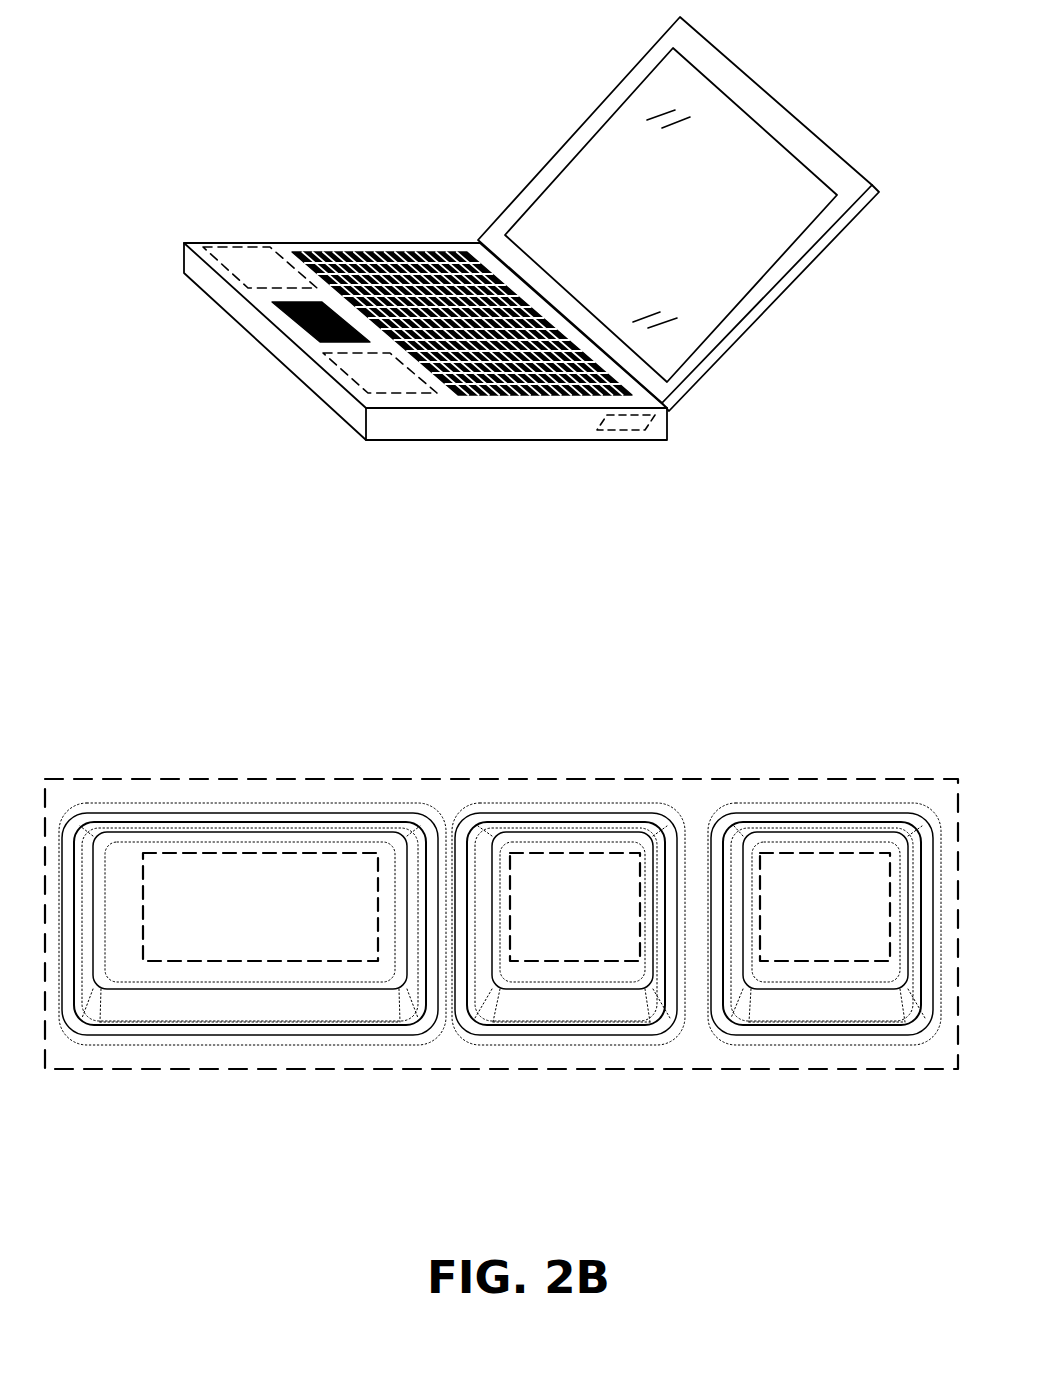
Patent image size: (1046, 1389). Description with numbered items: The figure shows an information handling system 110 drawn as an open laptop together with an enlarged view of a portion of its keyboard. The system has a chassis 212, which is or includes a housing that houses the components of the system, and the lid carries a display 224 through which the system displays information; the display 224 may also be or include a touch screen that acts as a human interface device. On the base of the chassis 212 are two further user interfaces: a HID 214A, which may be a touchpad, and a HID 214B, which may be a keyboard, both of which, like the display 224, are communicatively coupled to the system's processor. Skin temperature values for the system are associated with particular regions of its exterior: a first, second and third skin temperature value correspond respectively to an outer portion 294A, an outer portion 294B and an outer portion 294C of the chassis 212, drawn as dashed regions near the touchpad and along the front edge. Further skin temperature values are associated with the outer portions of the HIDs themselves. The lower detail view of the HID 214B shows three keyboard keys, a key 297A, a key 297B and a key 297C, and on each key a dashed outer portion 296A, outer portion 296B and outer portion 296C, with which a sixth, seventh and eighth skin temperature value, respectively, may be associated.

The computing device 110 is at (452, 110).
The chassis 212 is at (779, 297).
The display 224 is at (752, 112).
The human interface device 214A is at (297, 325).
The human interface device 214B is at (442, 255).
The outer portion of chassis 294A is at (236, 248).
The outer portion of chassis 294B is at (350, 383).
The outer portion of chassis 294C is at (632, 430).
The keyboard key 297A is at (300, 812).
The keyboard key 297B is at (548, 812).
The keyboard key 297C is at (818, 812).
The outer portion of keyboard key 296A is at (261, 961).
The outer portion of keyboard key 296B is at (571, 962).
The outer portion of keyboard key 296C is at (818, 962).